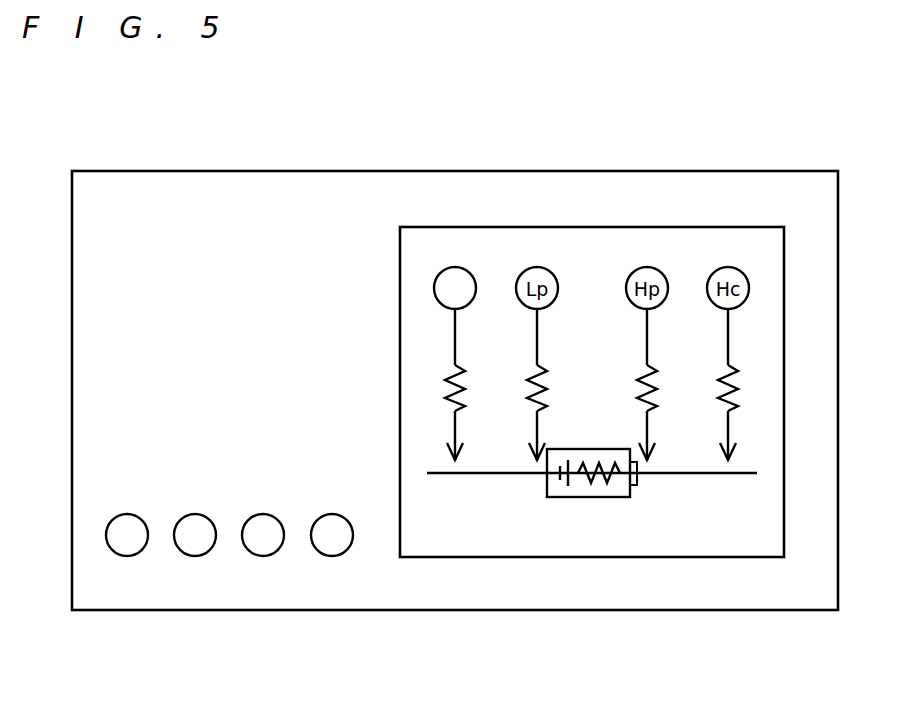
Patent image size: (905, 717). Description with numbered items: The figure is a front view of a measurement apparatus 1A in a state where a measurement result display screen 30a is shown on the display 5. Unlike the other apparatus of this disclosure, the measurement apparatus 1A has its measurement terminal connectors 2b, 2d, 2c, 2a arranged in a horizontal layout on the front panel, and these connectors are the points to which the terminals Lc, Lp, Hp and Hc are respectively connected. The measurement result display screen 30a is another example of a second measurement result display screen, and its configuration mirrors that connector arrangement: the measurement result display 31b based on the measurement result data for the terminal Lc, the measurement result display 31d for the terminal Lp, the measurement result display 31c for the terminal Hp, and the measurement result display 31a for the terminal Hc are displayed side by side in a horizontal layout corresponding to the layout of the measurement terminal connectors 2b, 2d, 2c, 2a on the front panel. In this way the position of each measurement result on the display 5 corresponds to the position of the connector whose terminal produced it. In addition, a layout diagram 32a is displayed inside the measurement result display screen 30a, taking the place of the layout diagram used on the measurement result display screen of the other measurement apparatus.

The measurement apparatus 1A is at (153, 170).
The display 5 is at (723, 557).
The measurement terminal connector 2a is at (332, 556).
The measurement terminal connector 2b is at (127, 556).
The measurement terminal connector 2c is at (263, 556).
The measurement terminal connector 2d is at (195, 556).
The measurement result display screen 30a is at (427, 268).
The measurement result display 31a is at (752, 366).
The measurement result display 31b is at (478, 366).
The measurement result display 31c is at (668, 366).
The measurement result display 31d is at (567, 366).
The layout diagram 32a is at (520, 498).